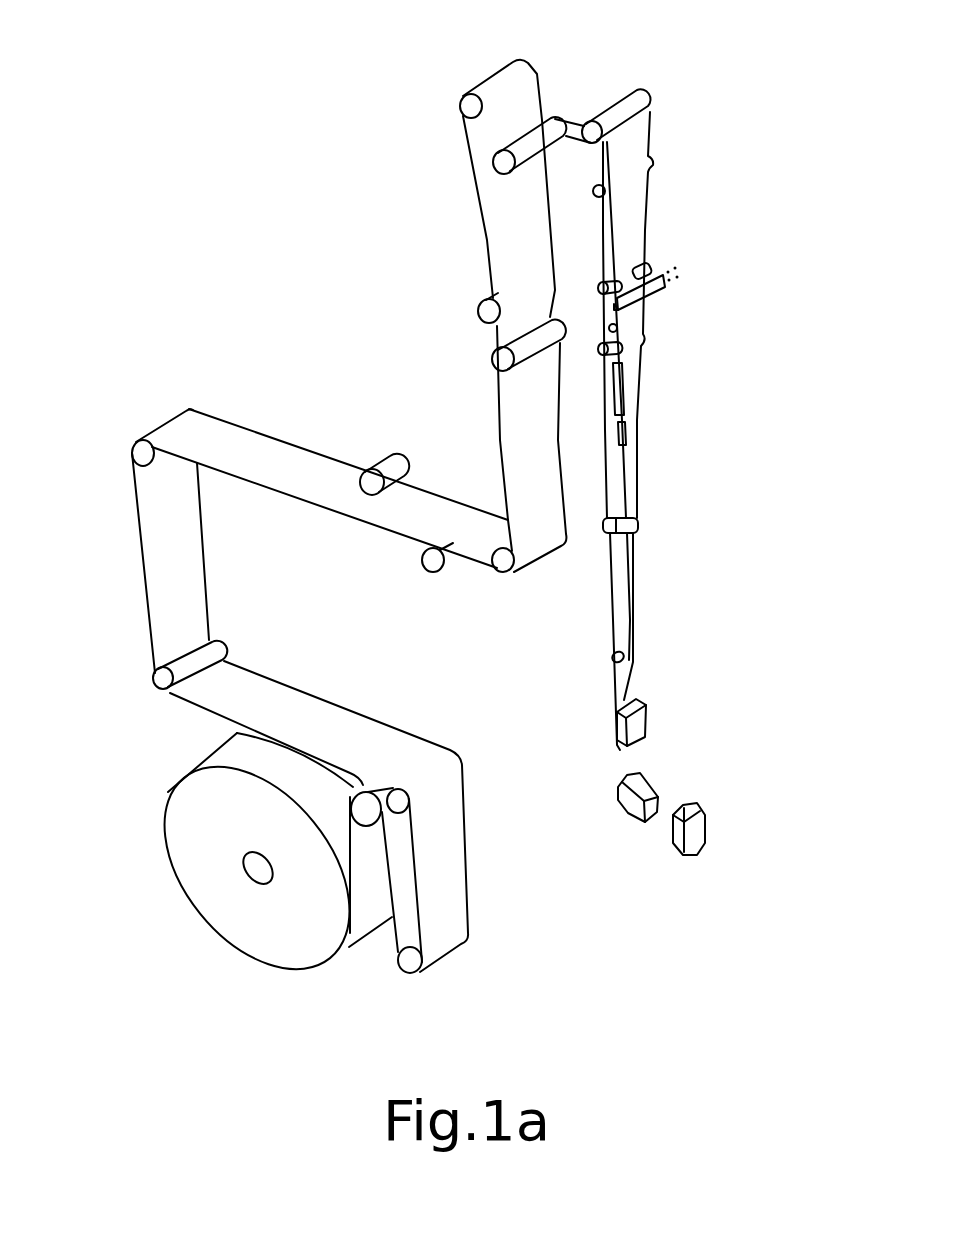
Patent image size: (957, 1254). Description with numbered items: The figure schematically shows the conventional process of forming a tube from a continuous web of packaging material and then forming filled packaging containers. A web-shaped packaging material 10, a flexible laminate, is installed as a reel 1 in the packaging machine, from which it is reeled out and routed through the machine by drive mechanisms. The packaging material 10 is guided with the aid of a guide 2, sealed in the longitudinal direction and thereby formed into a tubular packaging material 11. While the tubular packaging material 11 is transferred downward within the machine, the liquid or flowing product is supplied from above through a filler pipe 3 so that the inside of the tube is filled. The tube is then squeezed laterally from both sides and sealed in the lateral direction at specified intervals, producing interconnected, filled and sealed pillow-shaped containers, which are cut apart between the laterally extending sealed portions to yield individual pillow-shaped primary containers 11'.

The reel 1 is at (187, 810).
The web-shaped packaging material 10 is at (272, 457).
The tubular packaging material 11 is at (703, 419).
The pillow-shaped primary containers 11' is at (726, 762).
The guide 2 is at (652, 267).
The filler pipe 3 is at (650, 293).